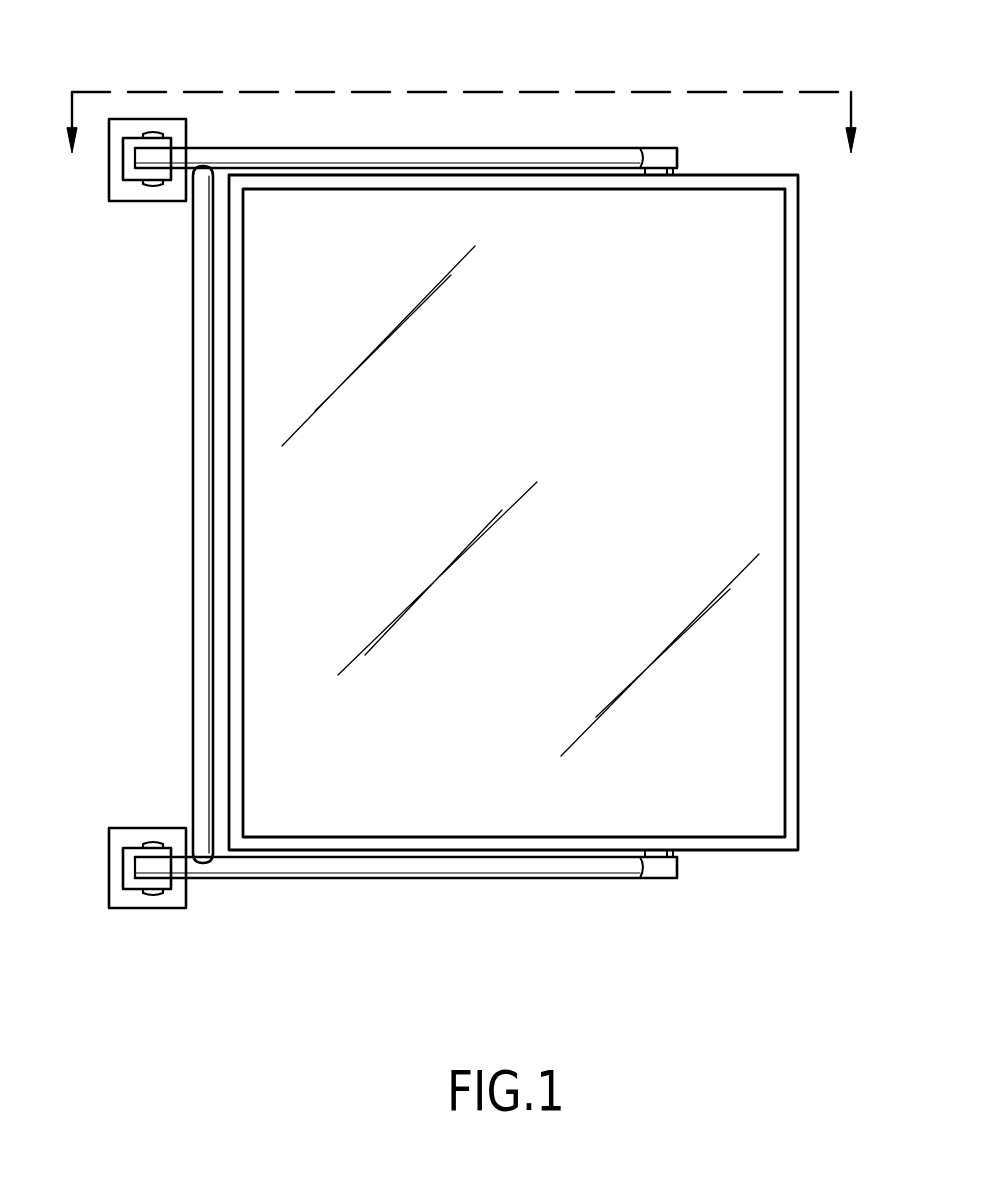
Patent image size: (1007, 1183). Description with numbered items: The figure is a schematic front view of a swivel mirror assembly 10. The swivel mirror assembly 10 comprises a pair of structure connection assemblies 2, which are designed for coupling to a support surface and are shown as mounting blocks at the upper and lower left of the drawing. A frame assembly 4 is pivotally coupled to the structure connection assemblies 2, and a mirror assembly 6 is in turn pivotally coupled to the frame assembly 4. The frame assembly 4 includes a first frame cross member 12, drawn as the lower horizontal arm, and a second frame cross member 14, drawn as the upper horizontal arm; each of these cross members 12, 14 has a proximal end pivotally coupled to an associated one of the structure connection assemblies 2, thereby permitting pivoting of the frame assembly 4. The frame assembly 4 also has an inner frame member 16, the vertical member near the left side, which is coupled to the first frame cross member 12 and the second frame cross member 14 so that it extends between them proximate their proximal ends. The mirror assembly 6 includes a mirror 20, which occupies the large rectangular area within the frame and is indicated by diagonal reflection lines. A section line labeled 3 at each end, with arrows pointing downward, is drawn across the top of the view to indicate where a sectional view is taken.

The structure connection assembly 2 is at (163, 119).
The section line 3- 3 is at (463, 97).
The frame assembly 4 is at (190, 643).
The mirror assembly 6 is at (799, 850).
The swivel mirror assembly 10 is at (148, 418).
The first frame cross member 12 is at (368, 857).
The second frame cross member 14 is at (382, 152).
The inner frame member 16 is at (202, 573).
The mirror 20 is at (729, 748).